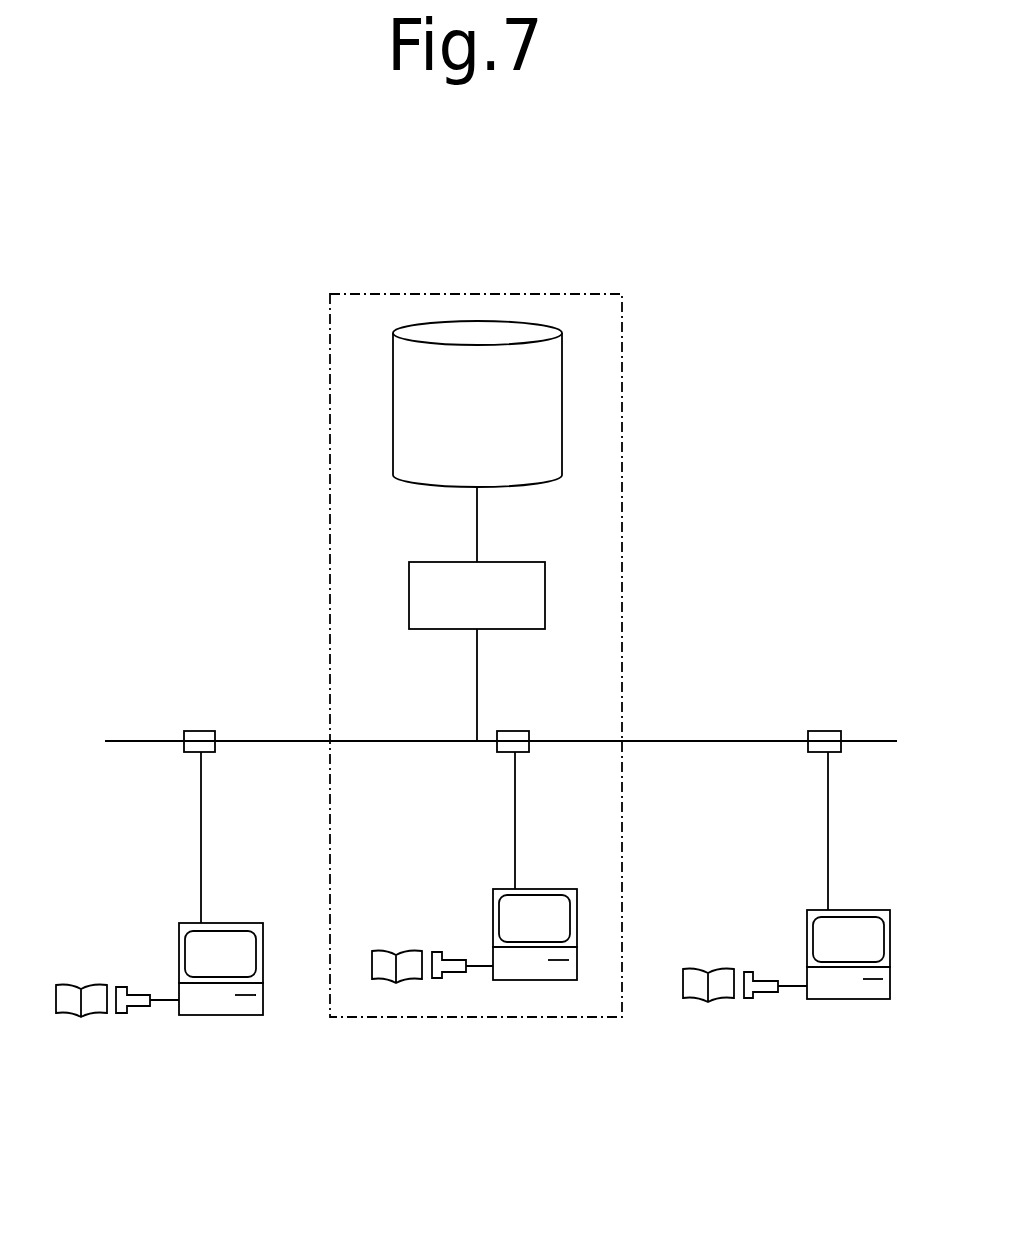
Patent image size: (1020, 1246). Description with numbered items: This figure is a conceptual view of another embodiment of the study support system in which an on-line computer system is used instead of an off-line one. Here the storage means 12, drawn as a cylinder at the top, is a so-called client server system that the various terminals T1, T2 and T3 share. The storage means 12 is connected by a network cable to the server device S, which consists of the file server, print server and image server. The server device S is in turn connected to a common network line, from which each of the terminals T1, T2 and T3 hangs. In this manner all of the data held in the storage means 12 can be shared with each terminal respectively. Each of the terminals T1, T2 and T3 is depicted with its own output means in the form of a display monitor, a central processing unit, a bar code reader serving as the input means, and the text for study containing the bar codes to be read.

The storage means 12 is at (545, 437).
The server device S is at (545, 597).
The terminal T1 is at (176, 926).
The terminal T2 is at (540, 926).
The terminal T3 is at (781, 926).